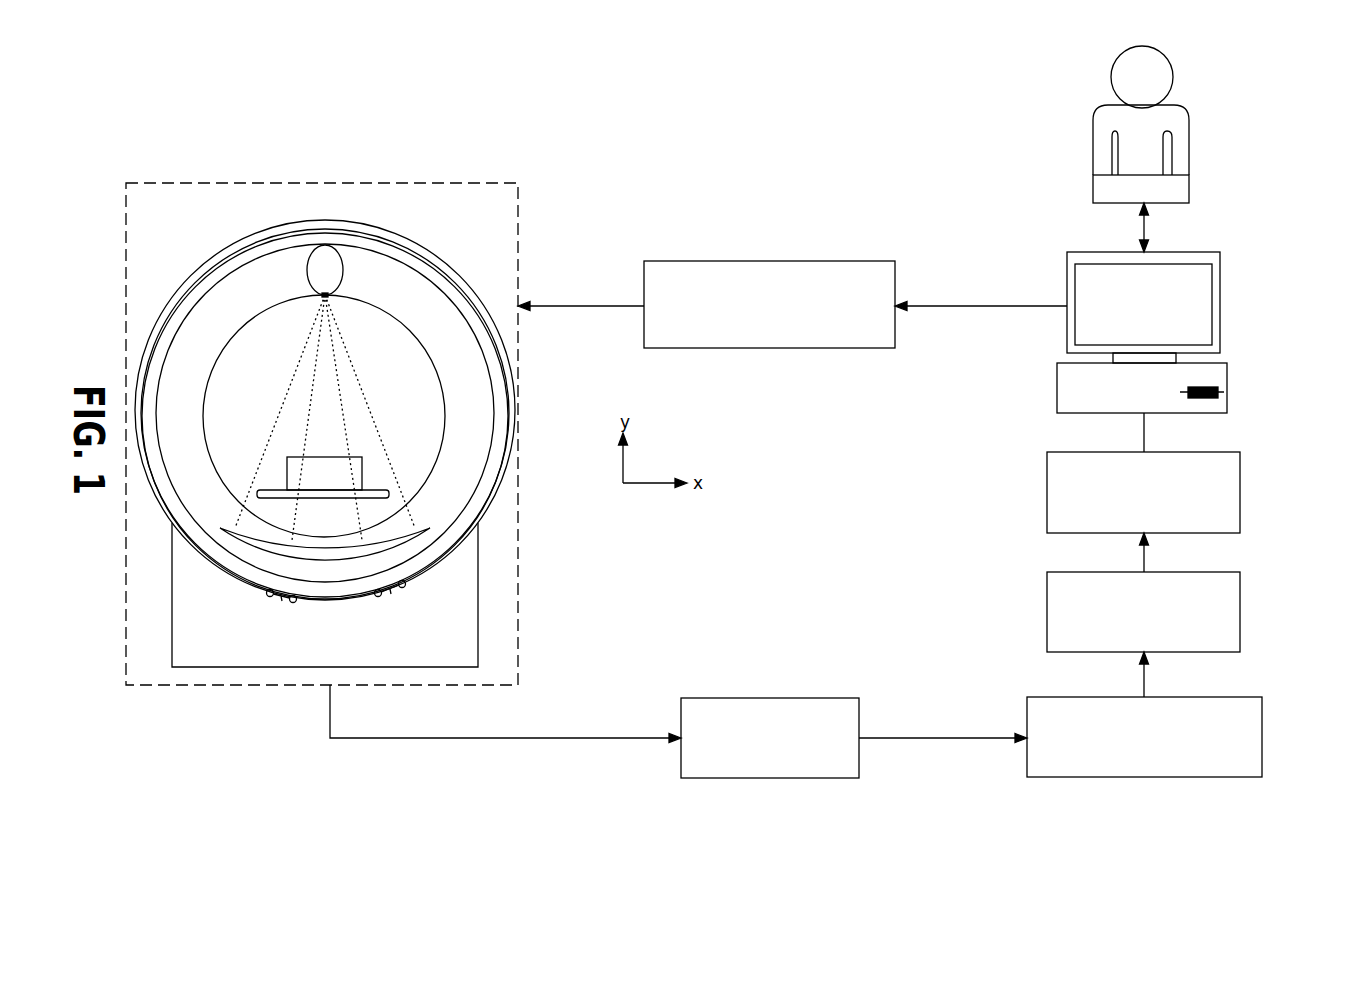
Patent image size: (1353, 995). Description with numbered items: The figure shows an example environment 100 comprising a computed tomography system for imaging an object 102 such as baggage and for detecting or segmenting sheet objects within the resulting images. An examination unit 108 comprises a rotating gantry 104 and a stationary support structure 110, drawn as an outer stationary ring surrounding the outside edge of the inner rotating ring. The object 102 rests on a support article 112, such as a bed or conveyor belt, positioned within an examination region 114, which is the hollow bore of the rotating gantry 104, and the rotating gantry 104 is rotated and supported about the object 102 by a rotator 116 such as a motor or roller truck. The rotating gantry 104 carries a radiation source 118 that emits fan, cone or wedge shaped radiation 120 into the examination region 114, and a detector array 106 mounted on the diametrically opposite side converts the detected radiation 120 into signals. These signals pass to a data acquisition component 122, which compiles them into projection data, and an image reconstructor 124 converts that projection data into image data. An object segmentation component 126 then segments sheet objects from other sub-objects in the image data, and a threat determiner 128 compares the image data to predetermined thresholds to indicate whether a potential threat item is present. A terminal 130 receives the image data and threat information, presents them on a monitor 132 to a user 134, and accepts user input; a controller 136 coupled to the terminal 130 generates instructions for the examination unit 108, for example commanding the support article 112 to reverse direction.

The example environment 100 is at (206, 104).
The object 102 is at (322, 456).
The rotating gantry 104 is at (250, 249).
The detector array 106 is at (252, 552).
The examination unit 108 is at (518, 183).
The support structure 110 is at (429, 240).
The support article 112 is at (263, 488).
The examination region 114 is at (310, 413).
The rotator 116 is at (406, 584).
The radiation source 118 is at (338, 268).
The radiation 120 is at (291, 377).
The data acquisition component 122 is at (770, 778).
The image reconstructor 124 is at (1262, 697).
The object segmentation component 126 is at (1240, 572).
The threat determiner 128 is at (1240, 452).
The terminal 130 is at (1227, 365).
The monitor 132 is at (1220, 255).
The user 134 is at (1188, 120).
The controller 136 is at (769, 261).